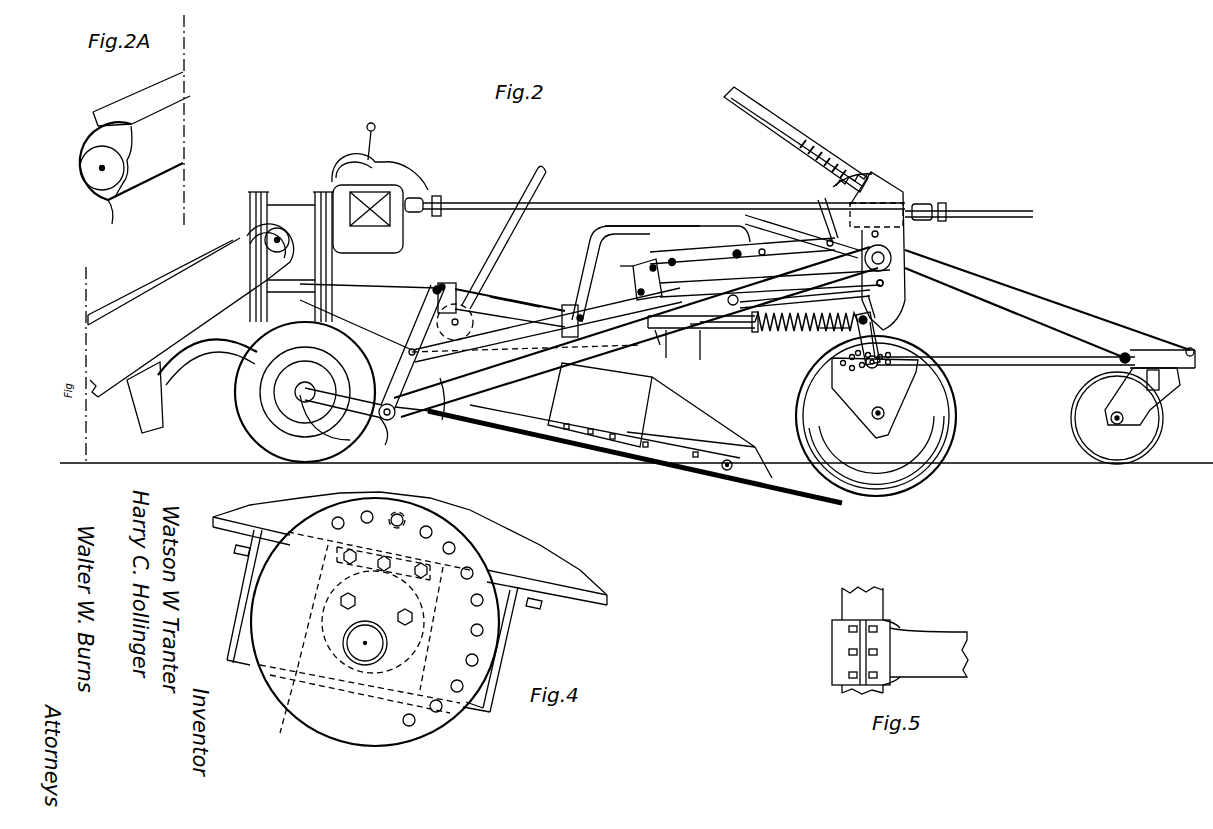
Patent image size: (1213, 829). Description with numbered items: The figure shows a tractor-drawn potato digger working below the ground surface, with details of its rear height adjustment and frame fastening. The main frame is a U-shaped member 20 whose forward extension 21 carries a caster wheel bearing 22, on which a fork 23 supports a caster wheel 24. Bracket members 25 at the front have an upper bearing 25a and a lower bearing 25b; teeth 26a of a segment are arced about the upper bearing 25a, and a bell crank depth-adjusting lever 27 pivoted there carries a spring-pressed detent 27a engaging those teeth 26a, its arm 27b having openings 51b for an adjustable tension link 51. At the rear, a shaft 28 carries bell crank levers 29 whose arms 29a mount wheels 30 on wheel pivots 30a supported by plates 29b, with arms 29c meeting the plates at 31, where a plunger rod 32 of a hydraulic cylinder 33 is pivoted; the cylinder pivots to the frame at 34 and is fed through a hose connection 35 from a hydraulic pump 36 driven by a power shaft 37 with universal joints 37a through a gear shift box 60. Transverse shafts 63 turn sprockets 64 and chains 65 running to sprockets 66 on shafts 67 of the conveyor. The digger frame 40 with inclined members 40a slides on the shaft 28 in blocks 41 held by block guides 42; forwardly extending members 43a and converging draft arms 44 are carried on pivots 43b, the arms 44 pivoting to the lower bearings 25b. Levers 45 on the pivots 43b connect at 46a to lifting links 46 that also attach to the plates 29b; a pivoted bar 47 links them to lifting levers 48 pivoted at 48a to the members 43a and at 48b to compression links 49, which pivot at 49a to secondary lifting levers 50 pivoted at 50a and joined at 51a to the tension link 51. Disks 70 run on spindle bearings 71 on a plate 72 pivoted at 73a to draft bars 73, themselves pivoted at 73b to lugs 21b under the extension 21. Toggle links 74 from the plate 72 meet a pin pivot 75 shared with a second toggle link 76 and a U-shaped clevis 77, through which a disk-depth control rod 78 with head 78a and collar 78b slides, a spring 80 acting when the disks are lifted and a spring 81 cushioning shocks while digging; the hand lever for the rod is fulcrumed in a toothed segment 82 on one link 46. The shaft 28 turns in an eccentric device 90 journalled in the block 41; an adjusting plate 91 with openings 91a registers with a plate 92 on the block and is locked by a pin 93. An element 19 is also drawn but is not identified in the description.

In FIG. 2, the strut 19 is at (508, 237).
In FIG. 2, the U-shaped main frame member 20 is at (460, 404).
In FIG. 5, the U-shaped main frame member 20 is at (942, 670).
In FIG. 2, the forwardly extending extension 21 is at (1042, 275).
In FIG. 2, the lugs 21b is at (1118, 352).
In FIG. 2, the caster wheel bearing 22 is at (1165, 340).
In FIG. 2, the fork 23 is at (1160, 402).
In FIG. 2, the caster wheel 24 is at (1148, 433).
In FIG. 2, the bracket members 25 is at (893, 256).
In FIG. 2, the upper bearing 25a is at (880, 234).
In FIG. 2, the lower bearing 25b is at (886, 288).
In FIG. 2, the teeth 26a is at (844, 182).
In FIG. 2, the bell crank depth-adjusting lever 27 is at (762, 132).
In FIG. 2, the spring-pressed detent 27a is at (808, 160).
In FIG. 2, the arm of depth-adjusting lever 27b is at (818, 214).
In FIG. 2, the shaft 28 is at (395, 418).
In FIG. 4, the shaft 28 is at (395, 614).
In FIG. 5, the shaft 28 is at (880, 600).
In FIG. 2, the bell crank levers 29 is at (396, 321).
In FIG. 2, the rearwardly extending arms 29a is at (396, 440).
In FIG. 2, the plates 29b is at (384, 307).
In FIG. 2, the arms 29c is at (408, 354).
In FIG. 2, the wheels 30 is at (256, 436).
In FIG. 2, the wheel pivots 30a is at (358, 432).
In FIG. 2, the pivot point 31 is at (432, 283).
In FIG. 2, the plunger rod 32 is at (444, 286).
In FIG. 2, the hydraulic cylinder 33 is at (532, 307).
In FIG. 2, the cylinder pivot 34 is at (582, 315).
In FIG. 2, the hose connection 35 is at (636, 274).
In FIG. 2, the hydraulic pump 36 is at (888, 204).
In FIG. 2, the power shaft 37 is at (610, 204).
In FIG. 2, the universal joints 37a is at (437, 216).
In FIG. 2, the digger frame 40 is at (670, 468).
In FIG. 4, the digger frame 40 is at (520, 560).
In FIG. 2, the inclined frame members 40a is at (446, 430).
In FIG. 4, the blocks 41 is at (285, 722).
In FIG. 4, the block guides 42 is at (500, 660).
In FIG. 2, the forwardly extending members 43a is at (706, 226).
In FIG. 2, the rear pivot points 43b is at (648, 332).
In FIG. 2, the converging arms 44 is at (665, 354).
In FIG. 2, the levers 45 is at (630, 272).
In FIG. 2, the lifting links 46 is at (512, 355).
In FIG. 2, the link pivot 46a is at (700, 356).
In FIG. 2, the pivoted bar 47 is at (636, 284).
In FIG. 2, the lifting levers 48 is at (716, 256).
In FIG. 2, the lifting lever pivot 48a is at (751, 243).
In FIG. 2, the pivot to compression links 48b is at (826, 244).
In FIG. 2, the compression links 49 is at (803, 224).
In FIG. 2, the compression link pivot 49a is at (700, 334).
In FIG. 2, the secondary lifting lever 50 is at (738, 298).
In FIG. 2, the secondary lever pivot 50a is at (676, 254).
In FIG. 2, the adjustable tension link 51 is at (805, 301).
In FIG. 2, the tension link pivot 51a is at (884, 284).
In FIG. 2, the openings 51b is at (800, 236).
In FIG. 2, the gear shift box 60 is at (370, 228).
In FIG. 2, the transverse shafts 63 is at (277, 238).
In FIG. 2, the sprockets 64 is at (258, 232).
In FIG. 2A, the driving chains 65 is at (104, 138).
In FIG. 2, the driving chains 65 is at (240, 232).
In FIG. 2A, the lower sprockets 66 is at (120, 181).
In FIG. 2A, the shafts 67 is at (100, 170).
In FIG. 2, the disks 70 is at (945, 420).
In FIG. 2, the spindle bearings 71 is at (880, 418).
In FIG. 2, the plate 72 is at (905, 392).
In FIG. 2, the draft bars 73 is at (1015, 365).
In FIG. 2, the draft bar pivot 73a is at (866, 370).
In FIG. 2, the draft bar forward pivot 73b is at (1126, 352).
In FIG. 2, the toggle links 74 is at (882, 340).
In FIG. 2, the pin pivot 75 is at (870, 316).
In FIG. 2, the second toggle link 76 is at (870, 300).
In FIG. 2, the U-shaped clevis 77 is at (800, 334).
In FIG. 2, the disk-depth control rod 78 is at (516, 300).
In FIG. 2, the head 78a is at (830, 332).
In FIG. 2, the collar 78b is at (754, 332).
In FIG. 2, the spring 80 is at (805, 330).
In FIG. 2, the spring 81 is at (770, 345).
In FIG. 2, the toothed segment 82 is at (450, 318).
In FIG. 4, the eccentric device 90 is at (340, 603).
In FIG. 4, the adjusting plate 91 is at (292, 575).
In FIG. 4, the openings 91a is at (430, 530).
In FIG. 4, the plate 92 is at (378, 496).
In FIG. 4, the bolt or pin 93 is at (402, 516).